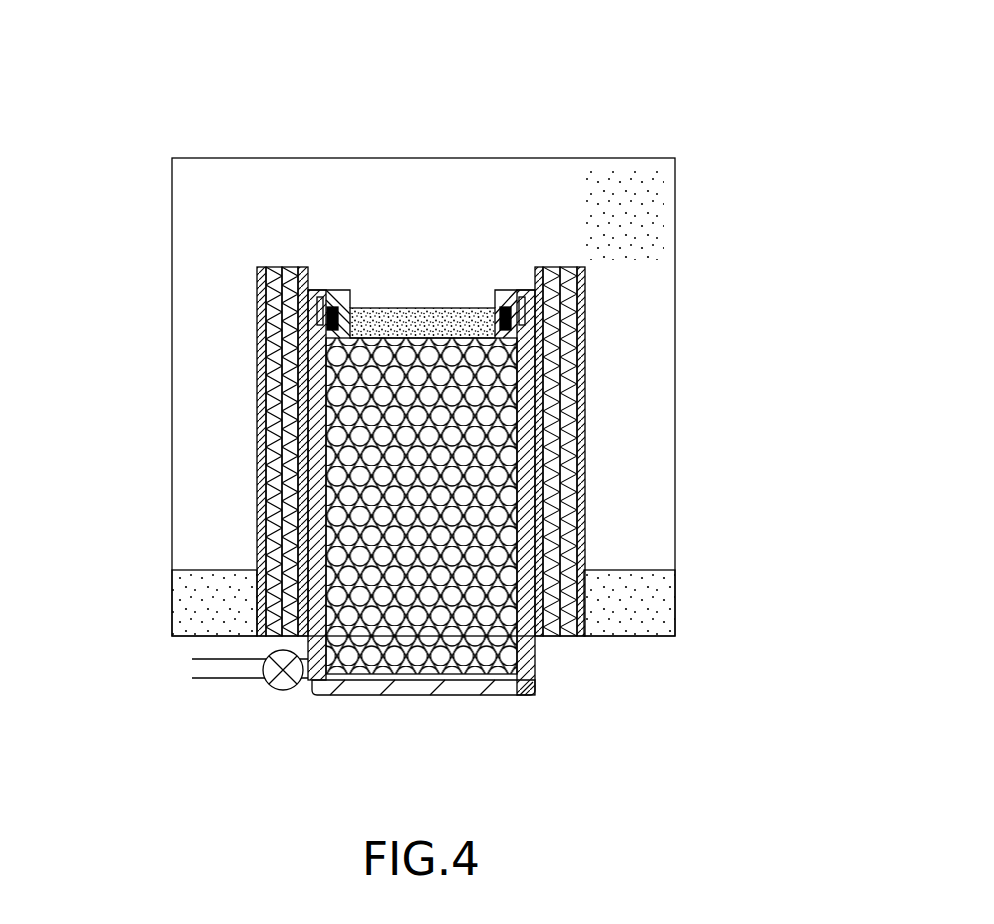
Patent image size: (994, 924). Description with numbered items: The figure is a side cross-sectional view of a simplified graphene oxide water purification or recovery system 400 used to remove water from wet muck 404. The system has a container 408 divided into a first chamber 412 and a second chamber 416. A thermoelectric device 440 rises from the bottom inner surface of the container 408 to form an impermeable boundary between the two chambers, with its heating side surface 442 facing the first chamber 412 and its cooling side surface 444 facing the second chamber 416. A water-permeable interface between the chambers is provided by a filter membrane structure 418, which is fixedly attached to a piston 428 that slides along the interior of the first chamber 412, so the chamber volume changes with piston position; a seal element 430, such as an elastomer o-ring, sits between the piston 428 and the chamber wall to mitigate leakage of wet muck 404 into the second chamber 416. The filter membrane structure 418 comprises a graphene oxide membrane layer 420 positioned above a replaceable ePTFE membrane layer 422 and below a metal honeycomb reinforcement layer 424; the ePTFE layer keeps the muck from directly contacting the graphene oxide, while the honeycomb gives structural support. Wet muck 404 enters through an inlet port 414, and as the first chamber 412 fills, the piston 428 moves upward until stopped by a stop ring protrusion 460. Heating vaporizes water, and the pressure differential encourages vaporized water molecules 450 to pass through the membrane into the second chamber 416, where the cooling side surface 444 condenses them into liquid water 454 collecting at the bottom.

The graphene oxide water purification or recovery system 400 is at (562, 66).
The wet muck 404 is at (377, 515).
The container 408 is at (415, 158).
The first chamber 412 is at (533, 703).
The inlet port 414 is at (278, 687).
The second chamber 416 is at (696, 156).
The filter membrane structure 418 is at (355, 267).
The graphene oxide membrane layer 420 is at (346, 291).
The replaceable ePTFE membrane layer 422 is at (340, 333).
The metal honeycomb reinforcement layer 424 is at (377, 310).
The piston 428 is at (348, 297).
The seal element 430 is at (512, 324).
The thermoelectric device 440 is at (565, 654).
The heating side surface 442 is at (546, 650).
The cooling side surface 444 is at (588, 650).
The vaporized water molecules 450 is at (565, 227).
The liquid water 454 is at (633, 600).
The stop ring protrusion 460 is at (518, 288).